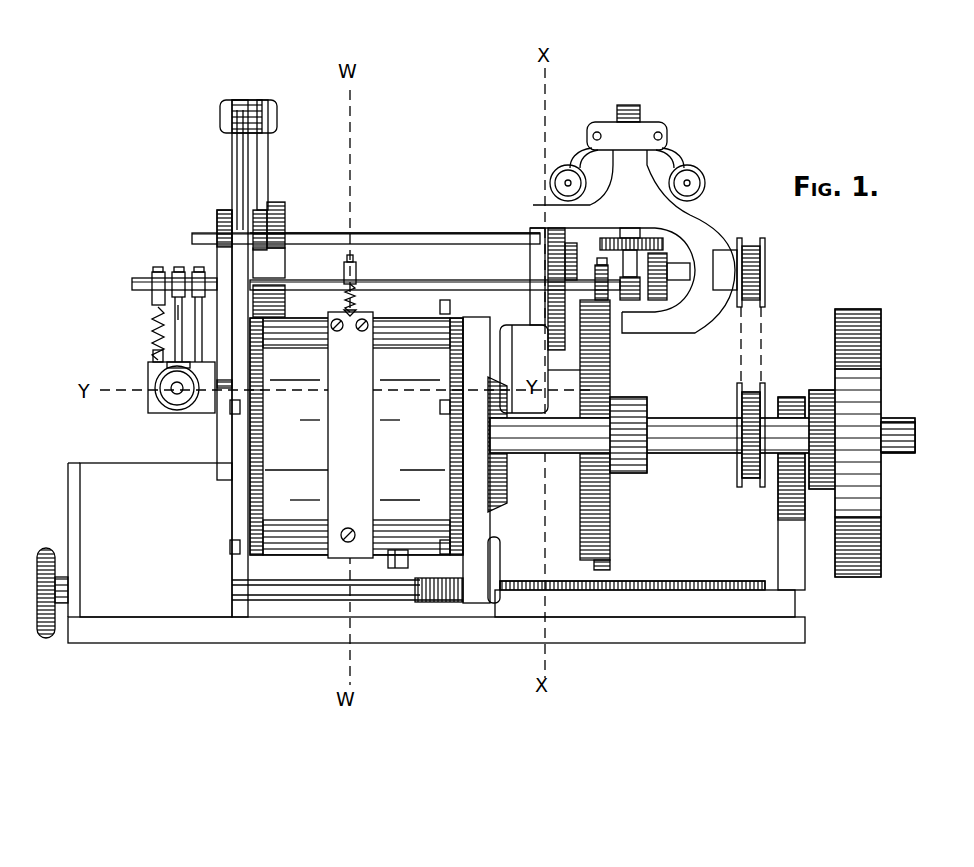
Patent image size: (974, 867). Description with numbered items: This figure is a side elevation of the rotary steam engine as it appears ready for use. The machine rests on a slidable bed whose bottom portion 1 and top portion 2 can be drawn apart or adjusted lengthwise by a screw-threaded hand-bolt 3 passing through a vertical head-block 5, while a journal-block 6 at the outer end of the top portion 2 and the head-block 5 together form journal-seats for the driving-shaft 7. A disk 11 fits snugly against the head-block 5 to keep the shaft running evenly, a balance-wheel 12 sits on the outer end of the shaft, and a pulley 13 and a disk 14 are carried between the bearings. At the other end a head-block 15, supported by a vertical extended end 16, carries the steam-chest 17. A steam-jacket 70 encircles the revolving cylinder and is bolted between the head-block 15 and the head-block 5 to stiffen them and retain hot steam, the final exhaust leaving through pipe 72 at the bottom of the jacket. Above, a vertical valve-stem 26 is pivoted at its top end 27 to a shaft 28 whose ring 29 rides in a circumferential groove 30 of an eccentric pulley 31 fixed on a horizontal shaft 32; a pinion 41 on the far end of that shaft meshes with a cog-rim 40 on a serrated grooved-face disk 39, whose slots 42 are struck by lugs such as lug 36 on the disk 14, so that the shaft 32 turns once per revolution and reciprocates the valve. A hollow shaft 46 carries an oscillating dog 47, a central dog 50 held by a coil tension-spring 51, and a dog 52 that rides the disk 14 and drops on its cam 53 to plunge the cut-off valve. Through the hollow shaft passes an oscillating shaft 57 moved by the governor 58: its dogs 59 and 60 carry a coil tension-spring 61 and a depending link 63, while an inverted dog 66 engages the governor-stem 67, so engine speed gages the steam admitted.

The bottom bed portion 1 is at (514, 624).
The top bed portion 2 is at (327, 607).
The screw-threaded hand-bolt 3 is at (285, 590).
The head-block 5 is at (478, 548).
The journal-block 6 is at (790, 583).
The driving-shaft 7 is at (683, 430).
The disk 11 is at (502, 502).
The balance-wheel 12 is at (860, 380).
The pulley 13 is at (762, 386).
The disk 14 is at (600, 505).
The head-block 15 is at (150, 540).
The vertical extended end 16 is at (217, 218).
The steam-chest 17 is at (152, 380).
The vertical valve-stem 26 is at (245, 152).
The top end of valve-stem 27 is at (243, 106).
The shaft 28 is at (264, 152).
The ring 29 is at (272, 210).
The circumferential groove 30 is at (285, 264).
The eccentric pulley 31 is at (285, 222).
The horizontal shaft 32 is at (435, 233).
The extended lug 36 is at (544, 371).
The serrated grooved-face disk 39 is at (578, 256).
The cog-rim 40 is at (487, 236).
The pinion 41 is at (557, 265).
The slots 42 is at (548, 352).
The hollow shaft 46 is at (445, 281).
The oscillating dog 47 is at (198, 270).
The dog 50 is at (358, 272).
The coil tension-spring 51 is at (345, 300).
The dog 52 is at (633, 312).
The cam 53 is at (603, 348).
The oscillating shaft 57 is at (132, 283).
The governor 58 is at (628, 106).
The oscillating dog 59 is at (155, 274).
The oscillating dog 60 is at (176, 270).
The coil tension-spring 61 is at (152, 328).
The depending link 63 is at (173, 310).
The inverted dog 66 is at (668, 272).
The governor-stem 67 is at (622, 262).
The steam-jacket 70 is at (313, 418).
The exhaust pipe 72 is at (398, 568).